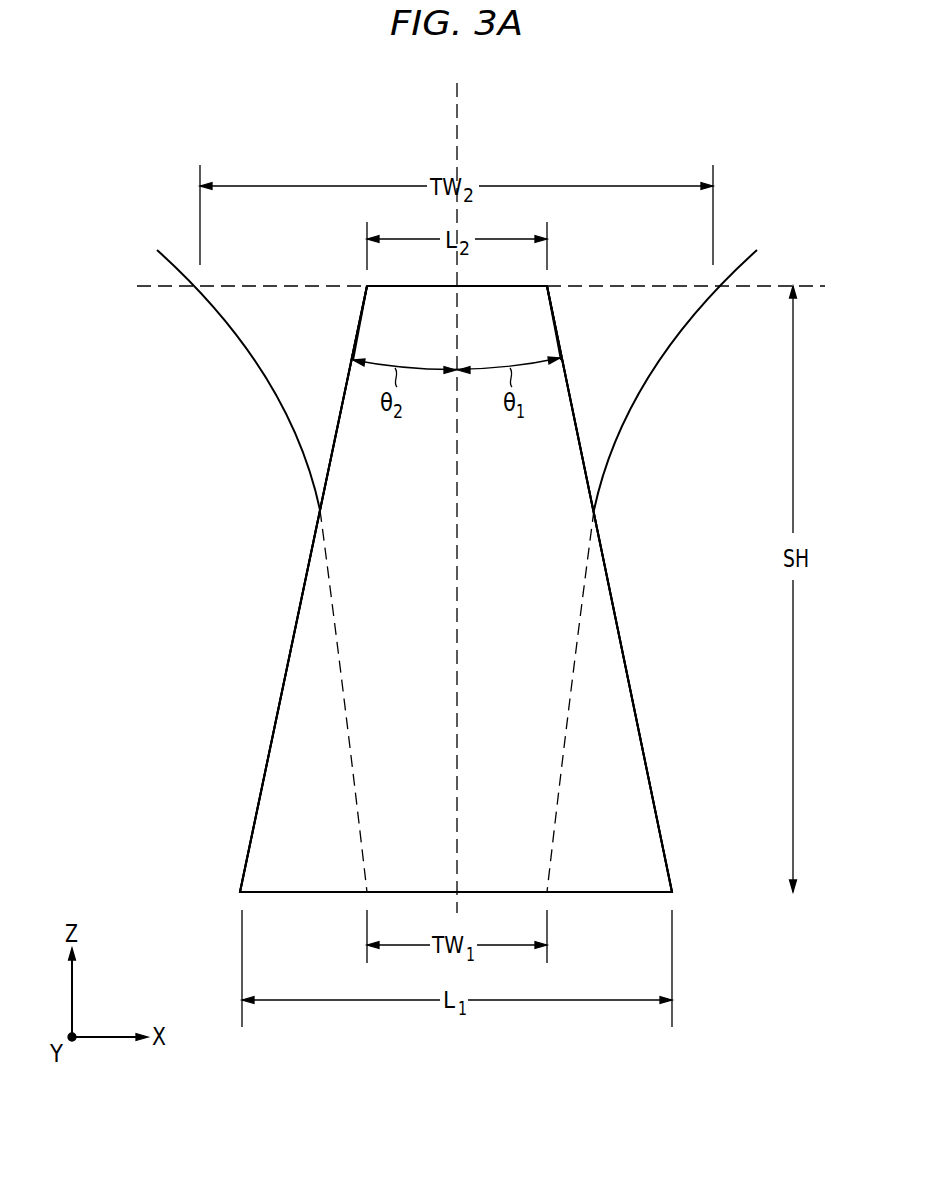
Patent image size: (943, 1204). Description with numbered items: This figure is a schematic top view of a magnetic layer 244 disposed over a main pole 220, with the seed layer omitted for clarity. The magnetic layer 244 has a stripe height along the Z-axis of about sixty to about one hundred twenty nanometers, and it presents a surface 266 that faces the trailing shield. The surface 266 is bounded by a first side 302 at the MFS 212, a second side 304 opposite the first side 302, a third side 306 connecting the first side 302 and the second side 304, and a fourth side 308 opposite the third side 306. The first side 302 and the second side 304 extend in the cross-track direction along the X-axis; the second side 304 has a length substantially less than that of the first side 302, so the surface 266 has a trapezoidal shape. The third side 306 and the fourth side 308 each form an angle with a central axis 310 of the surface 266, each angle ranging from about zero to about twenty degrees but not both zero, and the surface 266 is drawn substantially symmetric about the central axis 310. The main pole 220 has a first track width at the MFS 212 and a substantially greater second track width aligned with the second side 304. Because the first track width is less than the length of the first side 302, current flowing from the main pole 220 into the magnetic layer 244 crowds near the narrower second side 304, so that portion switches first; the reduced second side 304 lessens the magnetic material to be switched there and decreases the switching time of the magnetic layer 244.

The central axis 310 is at (458, 114).
The second side 304 is at (403, 284).
The surface 266 is at (495, 325).
The main pole 220 is at (598, 407).
The third side 306 is at (288, 665).
The fourth side 308 is at (630, 670).
The magnetic layer 244 is at (612, 748).
The MFS 212 is at (298, 893).
The first side 302 is at (603, 893).